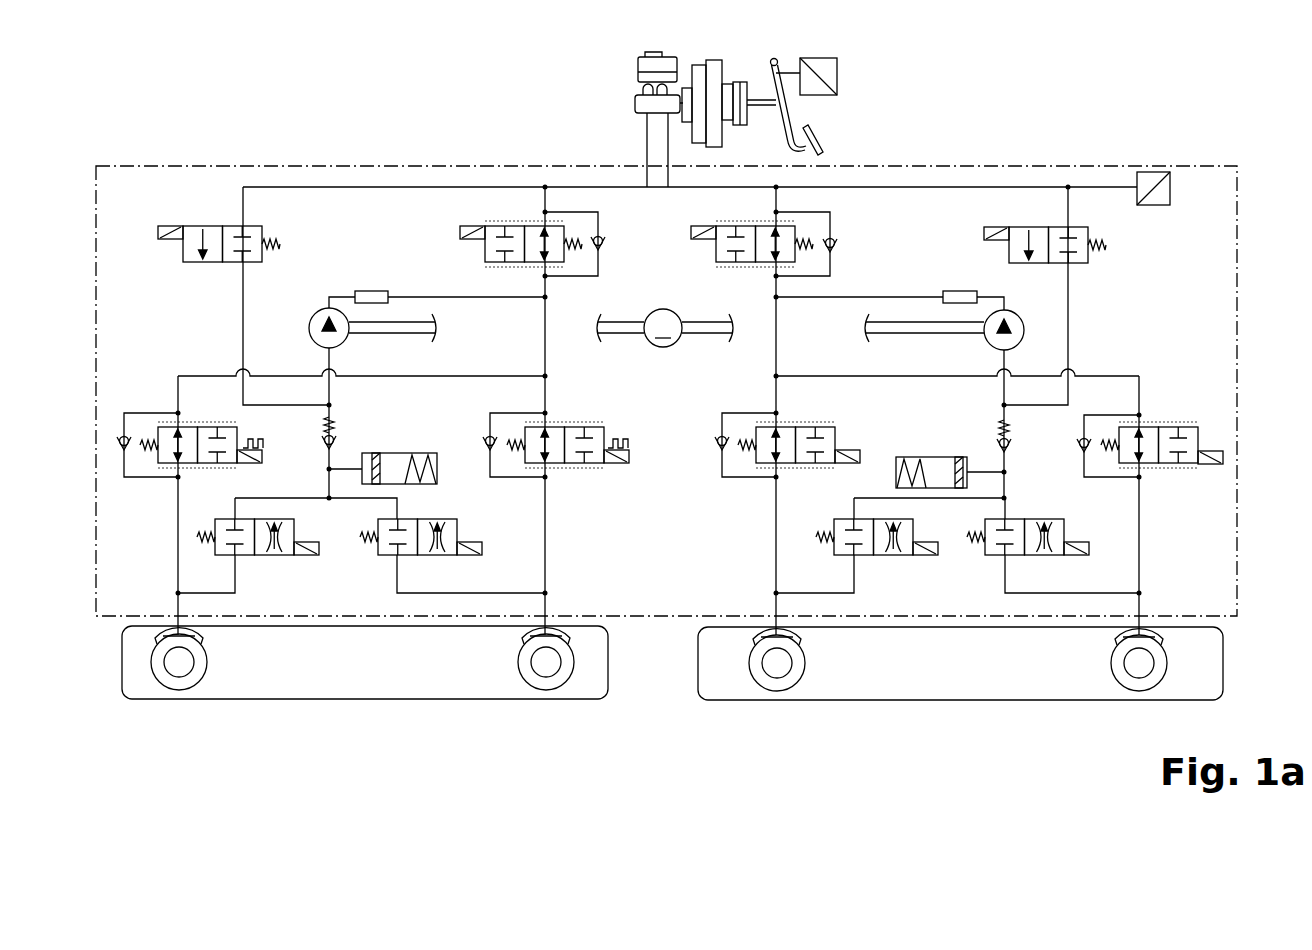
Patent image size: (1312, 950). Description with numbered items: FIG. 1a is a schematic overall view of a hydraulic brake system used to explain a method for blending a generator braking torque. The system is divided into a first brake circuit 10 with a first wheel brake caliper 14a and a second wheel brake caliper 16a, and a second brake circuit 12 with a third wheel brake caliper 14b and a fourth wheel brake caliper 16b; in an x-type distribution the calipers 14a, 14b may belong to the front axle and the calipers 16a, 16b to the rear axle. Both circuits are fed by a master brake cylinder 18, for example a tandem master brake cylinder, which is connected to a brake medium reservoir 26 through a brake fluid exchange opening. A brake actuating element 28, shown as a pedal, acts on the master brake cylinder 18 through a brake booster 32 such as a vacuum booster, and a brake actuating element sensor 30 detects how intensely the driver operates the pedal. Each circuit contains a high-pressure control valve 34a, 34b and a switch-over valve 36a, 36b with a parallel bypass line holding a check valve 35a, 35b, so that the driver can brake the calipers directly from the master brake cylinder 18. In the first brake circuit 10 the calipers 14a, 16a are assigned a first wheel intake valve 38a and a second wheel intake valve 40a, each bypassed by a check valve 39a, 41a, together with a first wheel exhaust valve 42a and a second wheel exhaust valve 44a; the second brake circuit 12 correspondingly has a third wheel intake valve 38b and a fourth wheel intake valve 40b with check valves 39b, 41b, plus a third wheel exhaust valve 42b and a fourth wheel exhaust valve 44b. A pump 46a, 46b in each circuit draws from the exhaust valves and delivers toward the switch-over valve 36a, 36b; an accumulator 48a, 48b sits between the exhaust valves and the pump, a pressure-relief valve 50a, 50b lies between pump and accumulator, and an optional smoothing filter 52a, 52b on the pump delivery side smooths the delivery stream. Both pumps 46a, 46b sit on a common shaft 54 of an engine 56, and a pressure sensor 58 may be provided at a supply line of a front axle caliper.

The first brake circuit 10 is at (768, 507).
The second brake circuit 12 is at (553, 551).
The first wheel brake caliper 14a is at (1125, 641).
The third wheel brake caliper 14b is at (533, 640).
The second wheel brake caliper 16a is at (790, 641).
The fourth wheel brake caliper 16b is at (193, 640).
The master brake cylinder 18 is at (646, 103).
The brake medium reservoir 26 is at (655, 64).
The brake actuating element 28 is at (795, 104).
The brake actuating element sensor 30 is at (818, 58).
The brake booster 32 is at (713, 140).
The high-pressure control valve 34a is at (1078, 265).
The high-pressure control valve 34b is at (265, 229).
The check valve 35a is at (866, 225).
The check valve 35b is at (607, 247).
The switch-over valve 36a is at (733, 268).
The switch-over valve 36b is at (515, 268).
The first wheel intake valve 38a is at (1203, 427).
The third wheel intake valve 38b is at (588, 468).
The check valve 39a is at (1077, 442).
The check valve 39b is at (487, 452).
The second wheel intake valve 40a is at (803, 470).
The fourth wheel intake valve 40b is at (199, 470).
The check valve 41a is at (717, 438).
The check valve 41b is at (117, 442).
The first wheel exhaust valve 42a is at (993, 558).
The third wheel exhaust valve 42b is at (375, 523).
The second wheel exhaust valve 44a is at (878, 557).
The fourth wheel exhaust valve 44b is at (287, 557).
The pump 46a is at (987, 347).
The pump 46b is at (313, 316).
The accumulator 48a is at (915, 457).
The accumulator 48b is at (427, 453).
The pressure-relief valve 50a is at (997, 442).
The pressure-relief valve 50b is at (336, 441).
The smoothing filter 52a is at (960, 291).
The smoothing filter 52b is at (373, 291).
The common shaft 54 is at (612, 330).
The engine 56 is at (655, 347).
The pressure sensor 58 is at (1151, 207).